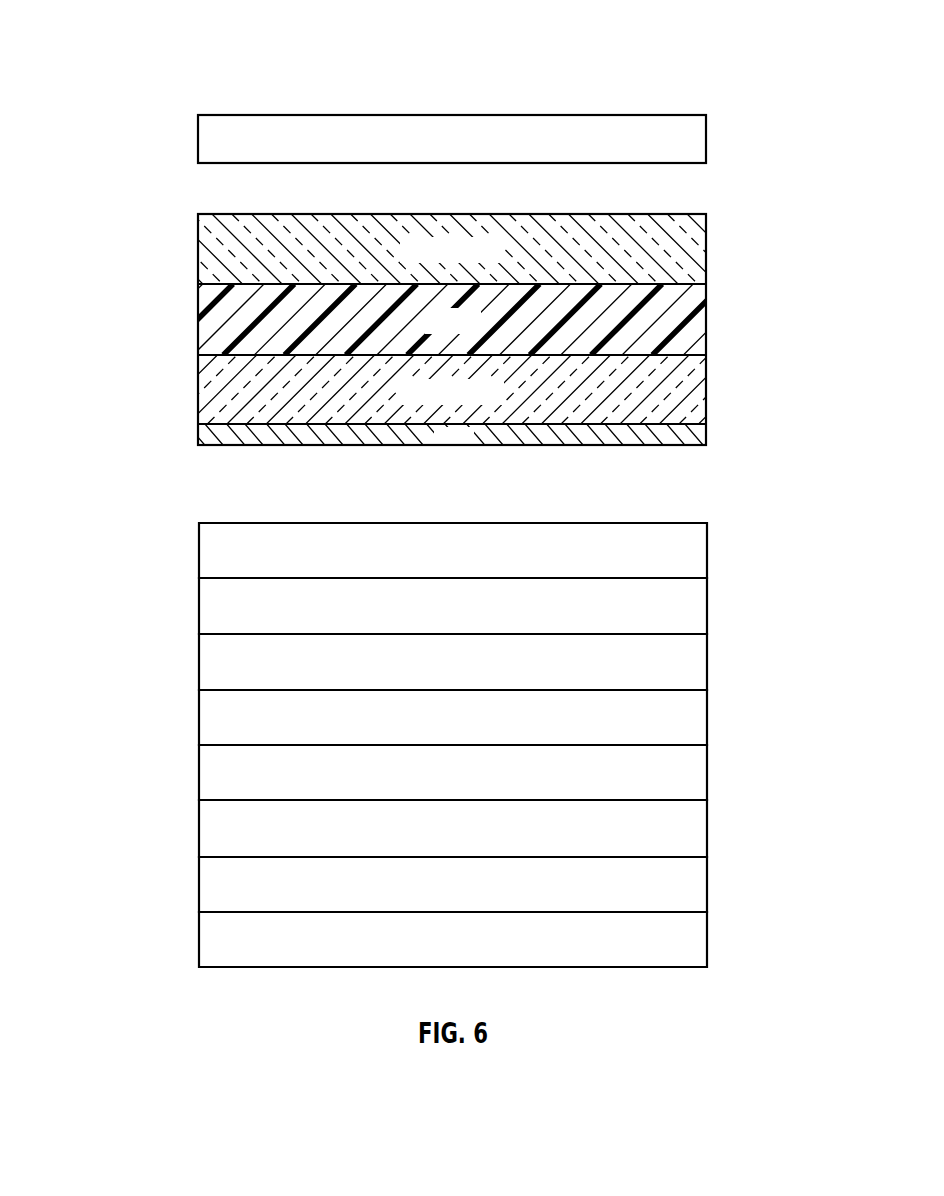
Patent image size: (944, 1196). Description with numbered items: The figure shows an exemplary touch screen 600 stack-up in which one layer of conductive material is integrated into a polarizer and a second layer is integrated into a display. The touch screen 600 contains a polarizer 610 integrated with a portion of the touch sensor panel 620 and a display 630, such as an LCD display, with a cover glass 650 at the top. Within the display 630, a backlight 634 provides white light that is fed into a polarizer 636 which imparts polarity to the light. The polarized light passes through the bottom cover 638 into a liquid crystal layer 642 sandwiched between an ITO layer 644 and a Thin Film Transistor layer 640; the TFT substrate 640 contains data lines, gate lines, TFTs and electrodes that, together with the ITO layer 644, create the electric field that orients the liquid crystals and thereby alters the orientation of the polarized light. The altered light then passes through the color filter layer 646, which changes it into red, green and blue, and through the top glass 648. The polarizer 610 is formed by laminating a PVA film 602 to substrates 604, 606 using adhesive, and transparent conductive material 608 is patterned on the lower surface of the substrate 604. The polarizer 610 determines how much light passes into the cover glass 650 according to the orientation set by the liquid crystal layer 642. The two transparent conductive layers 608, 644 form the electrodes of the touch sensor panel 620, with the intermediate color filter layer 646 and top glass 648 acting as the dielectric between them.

The touch screen 600 is at (105, 38).
The cover glass 650 is at (706, 140).
The polarizer 610 is at (145, 214).
The substrate 606 is at (198, 250).
The PVA film 602 is at (706, 318).
The substrate 604 is at (198, 390).
The transparent conductive material 608 is at (706, 435).
The touch sensor panel 620 is at (765, 425).
The display 630 is at (147, 523).
The top glass 648 is at (199, 551).
The color filter layer 646 is at (707, 605).
The ITO layer 644 is at (199, 663).
The liquid crystal layer 642 is at (707, 717).
The Thin Film Transistor (TFT) layer 640 is at (199, 773).
The bottom cover 638 is at (707, 826).
The polarizer 636 is at (199, 885).
The backlight 634 is at (707, 941).